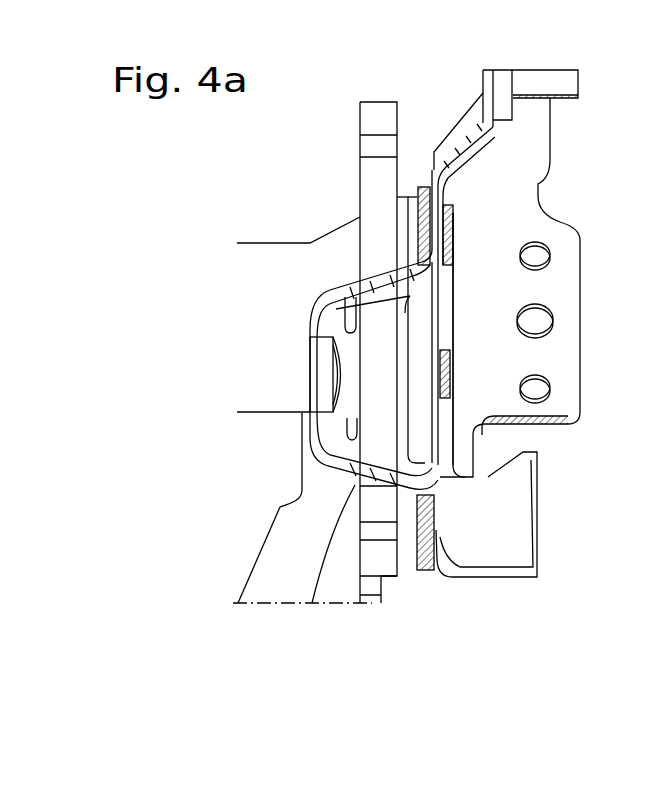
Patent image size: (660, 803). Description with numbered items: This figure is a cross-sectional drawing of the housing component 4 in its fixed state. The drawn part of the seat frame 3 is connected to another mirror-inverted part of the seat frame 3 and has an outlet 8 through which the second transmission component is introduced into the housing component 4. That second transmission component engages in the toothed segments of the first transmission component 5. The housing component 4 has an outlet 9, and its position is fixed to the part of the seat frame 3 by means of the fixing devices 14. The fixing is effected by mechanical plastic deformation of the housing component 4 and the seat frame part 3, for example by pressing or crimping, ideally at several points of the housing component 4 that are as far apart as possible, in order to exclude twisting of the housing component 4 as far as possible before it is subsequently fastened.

The seat frame part 3 is at (508, 323).
The housing component 4 is at (310, 318).
The first transmission component 5 is at (373, 181).
The outlet 8 is at (432, 374).
The outlet 9 is at (317, 382).
The fixing devices 14 is at (431, 185).